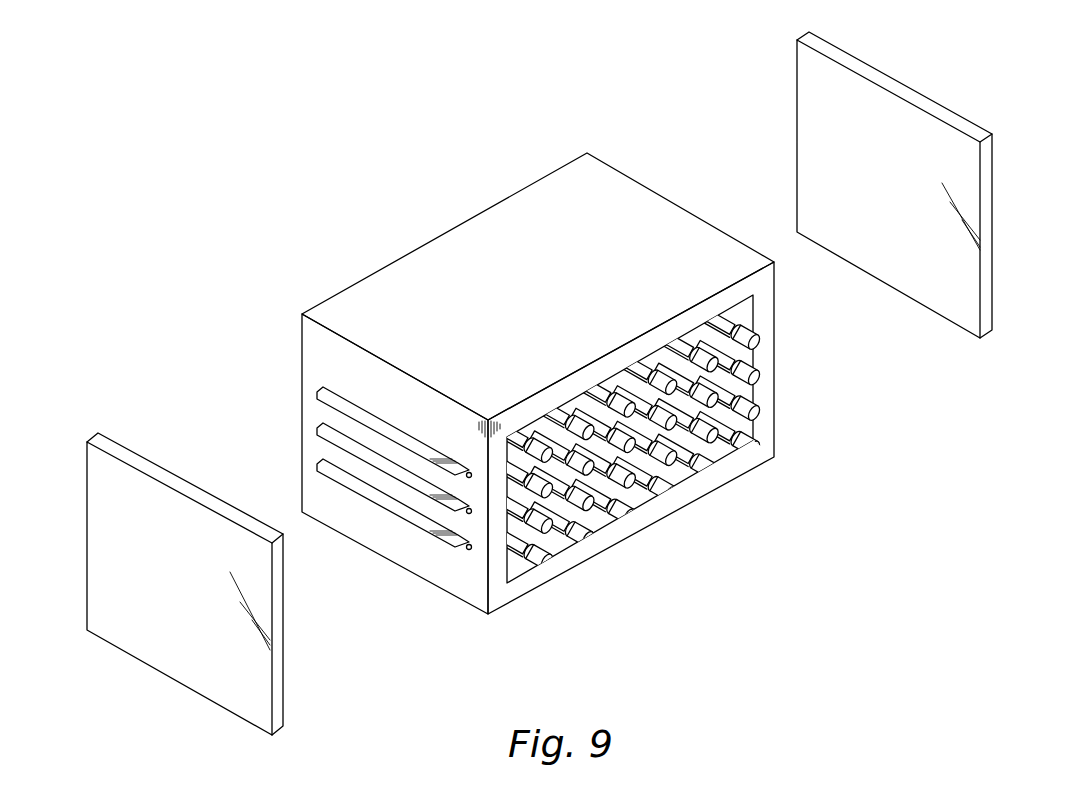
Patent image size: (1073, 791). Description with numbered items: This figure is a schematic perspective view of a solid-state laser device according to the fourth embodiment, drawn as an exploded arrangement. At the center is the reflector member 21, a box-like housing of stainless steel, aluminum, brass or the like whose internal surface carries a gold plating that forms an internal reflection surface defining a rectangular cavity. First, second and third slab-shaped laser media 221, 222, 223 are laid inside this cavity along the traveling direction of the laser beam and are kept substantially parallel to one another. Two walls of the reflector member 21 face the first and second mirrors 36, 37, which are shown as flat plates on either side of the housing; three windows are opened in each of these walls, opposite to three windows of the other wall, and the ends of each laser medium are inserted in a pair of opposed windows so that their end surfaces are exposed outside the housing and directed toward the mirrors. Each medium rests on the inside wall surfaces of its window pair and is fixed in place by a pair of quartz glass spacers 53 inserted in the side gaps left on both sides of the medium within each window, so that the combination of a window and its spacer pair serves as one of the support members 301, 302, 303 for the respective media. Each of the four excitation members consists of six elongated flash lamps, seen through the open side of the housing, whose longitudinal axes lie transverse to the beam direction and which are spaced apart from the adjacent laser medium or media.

The reflector member 21 is at (655, 513).
The first slab-shaped laser medium 221 is at (810, 360).
The second slab-shaped laser medium 222 is at (407, 473).
The third slab-shaped laser medium 223 is at (810, 433).
The first support member 301 is at (312, 382).
The second support member 302 is at (312, 418).
The third support member 303 is at (312, 454).
The spacer 53 is at (467, 468).
The first mirror 36 is at (275, 708).
The second mirror 37 is at (985, 303).